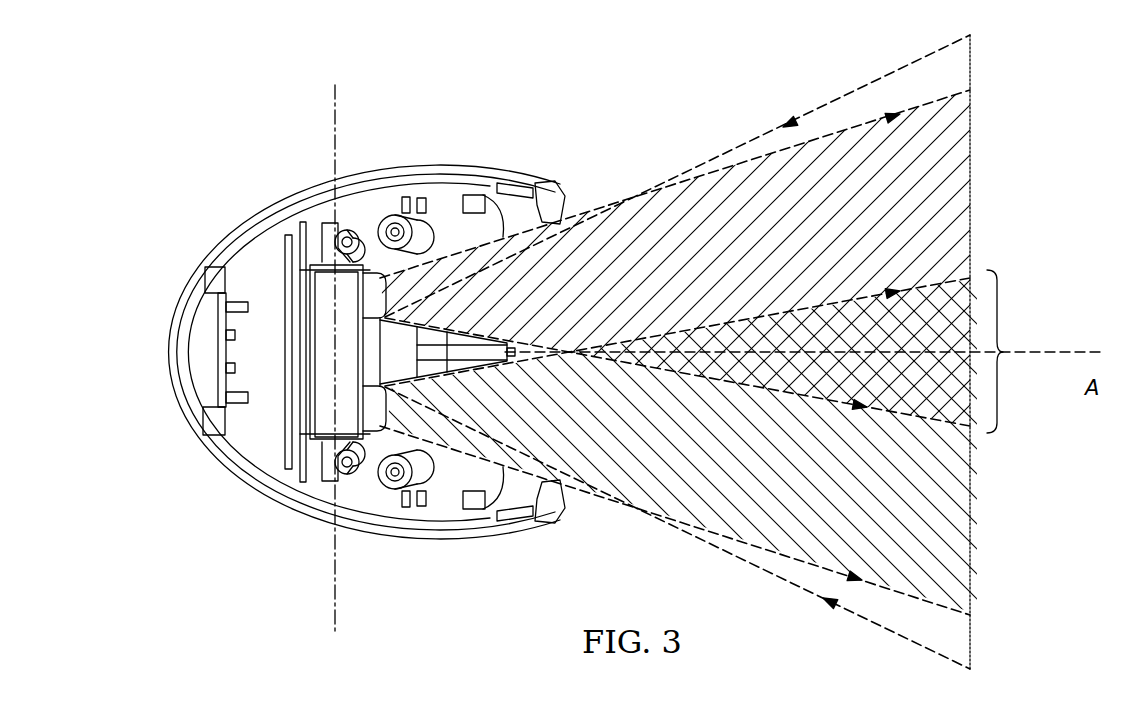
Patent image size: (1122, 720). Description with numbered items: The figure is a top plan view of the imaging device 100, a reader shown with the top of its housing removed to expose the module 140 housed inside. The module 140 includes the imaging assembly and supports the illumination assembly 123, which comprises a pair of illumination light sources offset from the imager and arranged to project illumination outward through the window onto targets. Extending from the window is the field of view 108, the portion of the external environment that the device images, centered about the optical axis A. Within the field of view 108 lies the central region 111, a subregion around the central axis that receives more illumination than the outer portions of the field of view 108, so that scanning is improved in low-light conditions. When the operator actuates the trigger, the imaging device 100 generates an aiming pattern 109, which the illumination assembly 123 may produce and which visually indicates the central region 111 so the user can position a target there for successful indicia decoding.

The imaging device 100 is at (128, 230).
The illumination assembly 123 is at (371, 247).
The module 140 is at (322, 410).
The central region 111 is at (740, 207).
The field of view 108 is at (845, 97).
The aiming pattern 109 is at (1003, 352).